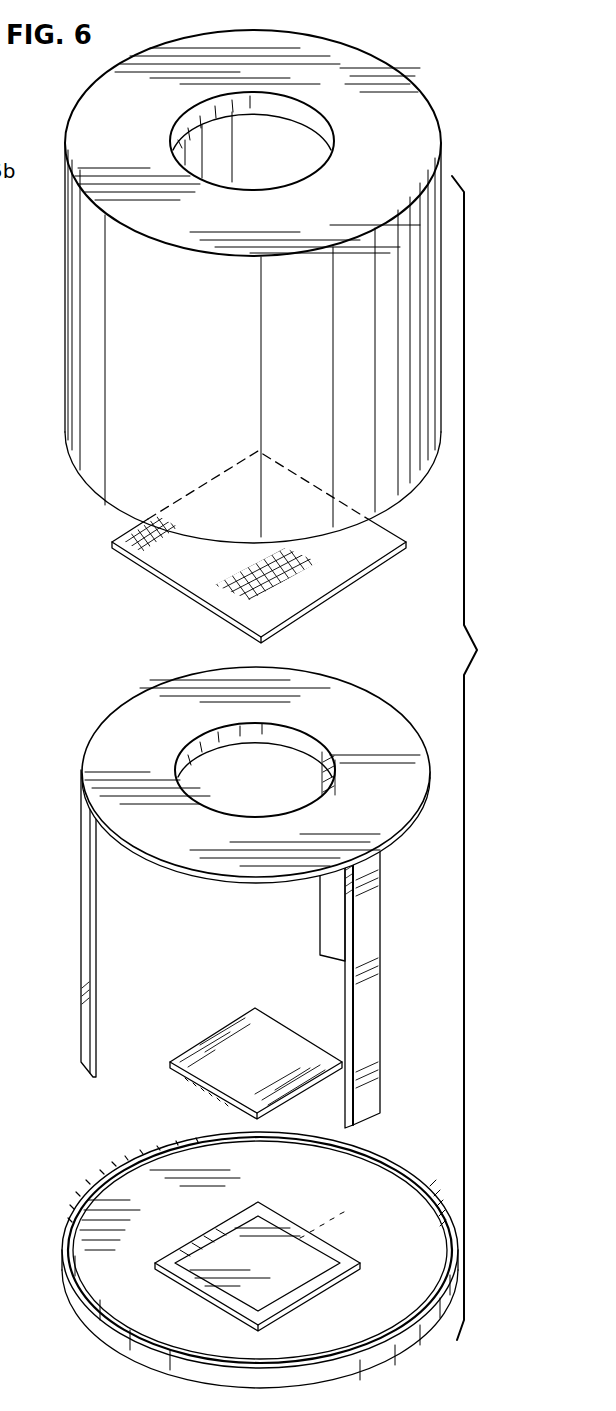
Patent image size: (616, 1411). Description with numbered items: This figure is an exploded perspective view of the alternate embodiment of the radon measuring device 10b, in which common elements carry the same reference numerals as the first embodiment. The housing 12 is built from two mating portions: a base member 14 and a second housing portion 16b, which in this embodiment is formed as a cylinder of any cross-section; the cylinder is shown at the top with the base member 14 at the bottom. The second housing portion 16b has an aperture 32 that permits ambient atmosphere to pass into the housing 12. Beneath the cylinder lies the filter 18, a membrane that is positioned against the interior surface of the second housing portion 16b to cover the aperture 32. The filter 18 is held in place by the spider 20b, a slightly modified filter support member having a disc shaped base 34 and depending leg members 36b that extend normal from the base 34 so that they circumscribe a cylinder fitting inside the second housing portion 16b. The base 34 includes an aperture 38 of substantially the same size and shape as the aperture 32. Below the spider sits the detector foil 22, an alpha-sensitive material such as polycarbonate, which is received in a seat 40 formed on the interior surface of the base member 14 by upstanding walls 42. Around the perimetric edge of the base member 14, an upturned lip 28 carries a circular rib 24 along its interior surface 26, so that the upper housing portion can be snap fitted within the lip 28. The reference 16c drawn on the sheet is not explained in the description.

The radon measuring device 10b is at (416, 62).
The housing 12 is at (0, 281).
The base member 14 is at (352, 1203).
The second housing portion 16b is at (441, 120).
The base dish 16c is at (0, 1140).
The filter 18 is at (191, 594).
The spider 20b is at (129, 715).
The detector foil 22 is at (213, 1068).
The circular rib 24 is at (122, 1178).
The interior surface 26 is at (75, 1266).
The upturned lip 28 is at (88, 1318).
The aperture 32 is at (265, 190).
The disc shaped base 34 is at (172, 834).
The leg members 36b is at (97, 958).
The aperture 38 is at (287, 742).
The seat 40 is at (165, 1213).
The upstanding walls 42 is at (217, 1228).